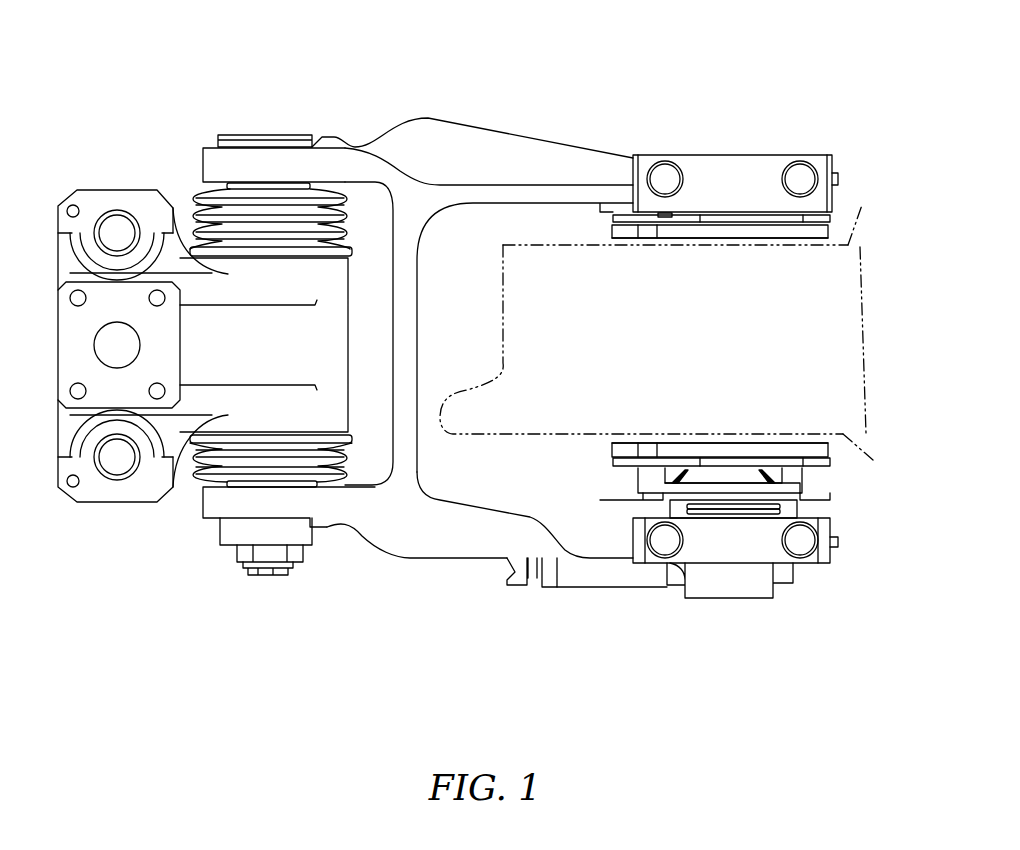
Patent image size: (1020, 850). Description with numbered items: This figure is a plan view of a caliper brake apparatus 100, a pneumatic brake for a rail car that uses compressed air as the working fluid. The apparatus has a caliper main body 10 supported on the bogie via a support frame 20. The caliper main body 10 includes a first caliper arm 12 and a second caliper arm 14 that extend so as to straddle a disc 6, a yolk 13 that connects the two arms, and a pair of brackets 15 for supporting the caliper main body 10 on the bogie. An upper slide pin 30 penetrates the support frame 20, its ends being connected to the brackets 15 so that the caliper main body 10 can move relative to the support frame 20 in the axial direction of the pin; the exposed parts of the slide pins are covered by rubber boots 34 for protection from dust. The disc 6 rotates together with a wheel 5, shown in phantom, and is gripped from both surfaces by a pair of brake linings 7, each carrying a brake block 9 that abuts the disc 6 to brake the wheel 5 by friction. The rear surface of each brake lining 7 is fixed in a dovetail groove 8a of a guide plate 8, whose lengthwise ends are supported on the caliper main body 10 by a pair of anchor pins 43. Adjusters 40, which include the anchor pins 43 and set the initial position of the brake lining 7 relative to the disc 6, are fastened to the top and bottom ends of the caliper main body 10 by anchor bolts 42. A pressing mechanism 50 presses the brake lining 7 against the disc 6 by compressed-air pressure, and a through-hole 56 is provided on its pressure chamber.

The caliper brake apparatus 100 is at (686, 126).
The caliper main body 10 is at (489, 351).
The first caliper arm 12 is at (483, 497).
The yolk 13 is at (405, 326).
The second caliper arm 14 is at (508, 195).
The bracket 15 is at (270, 172).
The support frame 20 is at (118, 188).
The upper slide pin 30 is at (278, 576).
The rubber boot 34 is at (232, 200).
The adjuster 40 is at (735, 142).
The anchor bolt 42 is at (664, 178).
The anchor pin 43 is at (732, 497).
The pressing mechanism 50 is at (688, 569).
The through-hole 56 is at (530, 583).
The wheel 5 is at (556, 367).
The disc 6 is at (863, 329).
The brake lining 7 is at (604, 223).
The guide plate 8 is at (804, 478).
The dovetail groove 8a is at (800, 491).
The brake block 9 is at (718, 240).